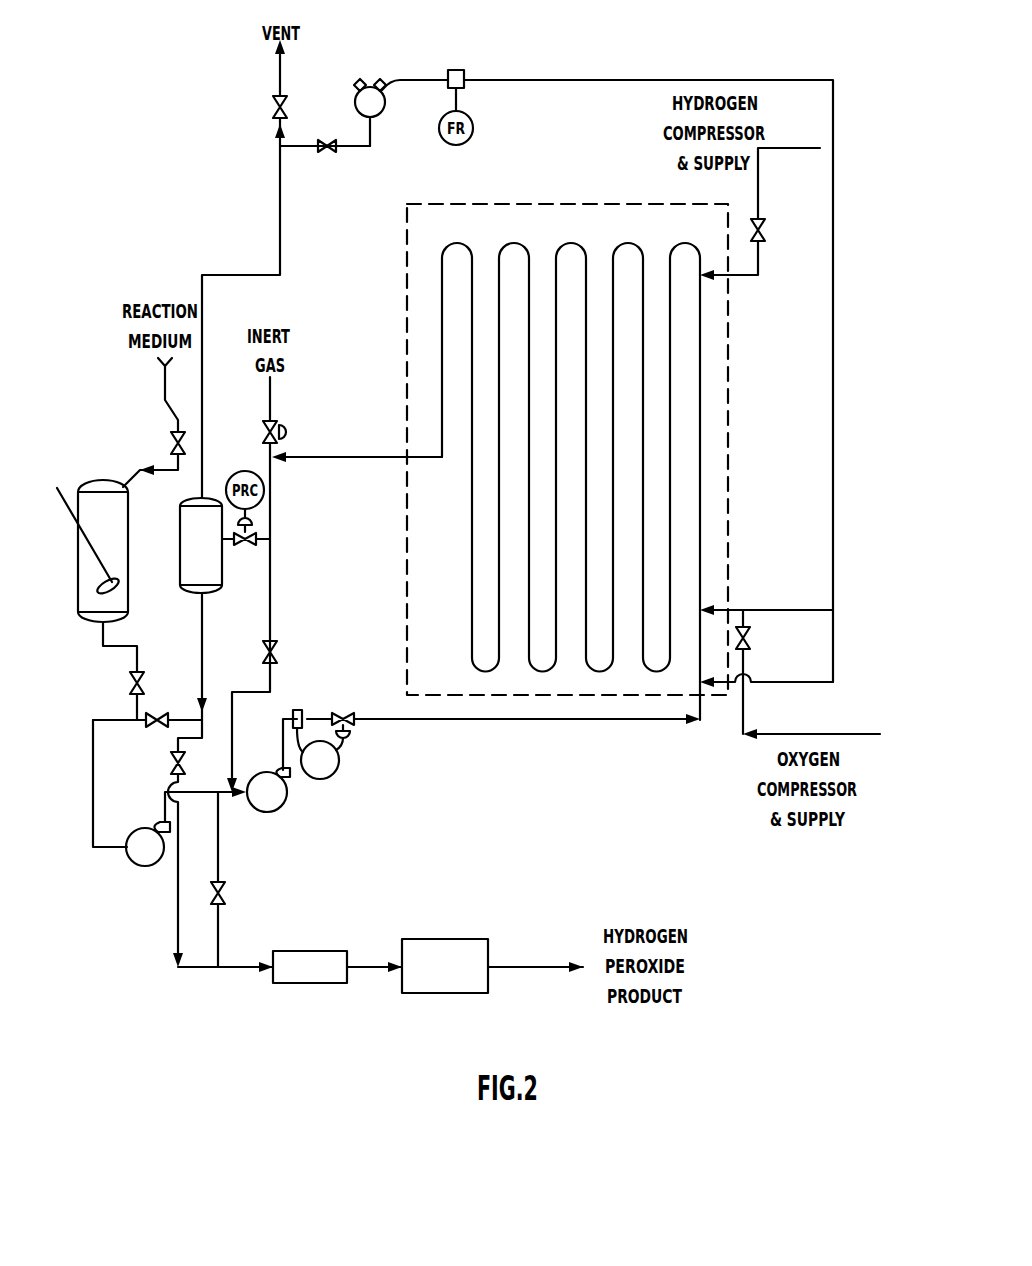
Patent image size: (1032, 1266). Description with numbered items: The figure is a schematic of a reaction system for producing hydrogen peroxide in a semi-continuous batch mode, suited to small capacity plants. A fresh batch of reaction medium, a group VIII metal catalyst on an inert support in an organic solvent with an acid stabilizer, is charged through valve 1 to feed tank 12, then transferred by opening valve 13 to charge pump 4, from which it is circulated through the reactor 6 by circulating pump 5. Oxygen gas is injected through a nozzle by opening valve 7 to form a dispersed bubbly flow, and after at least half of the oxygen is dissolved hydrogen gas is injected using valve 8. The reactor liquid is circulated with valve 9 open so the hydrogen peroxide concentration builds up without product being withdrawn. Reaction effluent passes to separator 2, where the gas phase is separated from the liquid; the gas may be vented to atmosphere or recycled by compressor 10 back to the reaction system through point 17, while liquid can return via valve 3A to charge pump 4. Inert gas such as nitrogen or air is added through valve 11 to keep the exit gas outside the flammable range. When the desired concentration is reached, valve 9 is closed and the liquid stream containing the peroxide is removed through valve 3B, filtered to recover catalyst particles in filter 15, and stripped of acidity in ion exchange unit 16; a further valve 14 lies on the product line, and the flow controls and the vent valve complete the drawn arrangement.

The valve 1 is at (172, 450).
The separator 2 is at (222, 572).
The valve 3A is at (147, 709).
The valve 3B is at (173, 843).
The charge pump 4 is at (148, 866).
The circulating pump 5 is at (267, 812).
The reactor 6 is at (732, 452).
The oxygen valve 7 is at (752, 641).
The hydrogen valve 8 is at (762, 236).
The valve 9 is at (272, 658).
The compressor 10 is at (379, 112).
The inert gas valve 11 is at (288, 432).
The feed tank 12 is at (78, 578).
The valve 13 is at (132, 688).
The product valve 14 is at (228, 896).
The filter 15 is at (316, 984).
The ion exchange unit 16 is at (466, 994).
The gas recycle point 17 is at (702, 704).